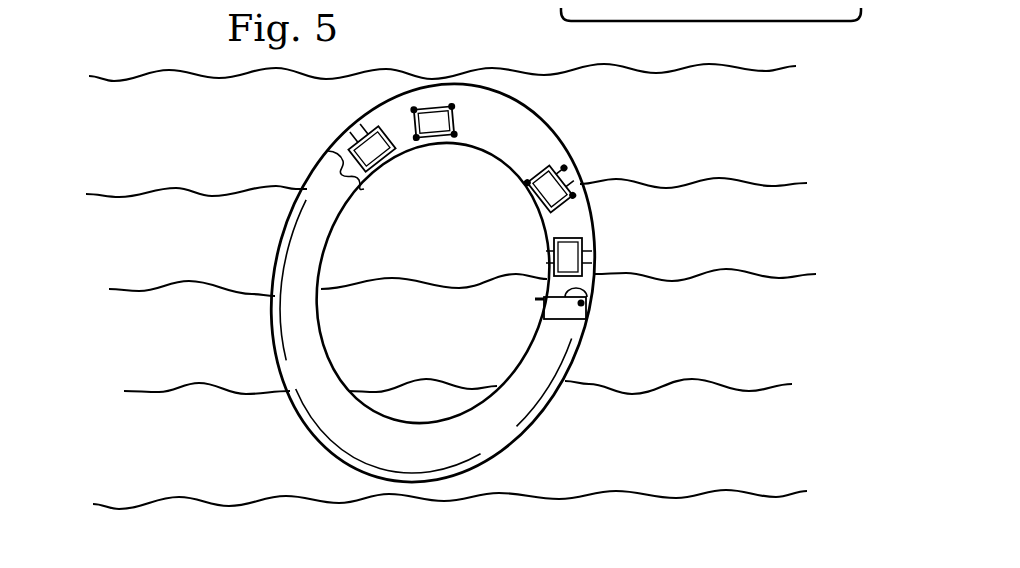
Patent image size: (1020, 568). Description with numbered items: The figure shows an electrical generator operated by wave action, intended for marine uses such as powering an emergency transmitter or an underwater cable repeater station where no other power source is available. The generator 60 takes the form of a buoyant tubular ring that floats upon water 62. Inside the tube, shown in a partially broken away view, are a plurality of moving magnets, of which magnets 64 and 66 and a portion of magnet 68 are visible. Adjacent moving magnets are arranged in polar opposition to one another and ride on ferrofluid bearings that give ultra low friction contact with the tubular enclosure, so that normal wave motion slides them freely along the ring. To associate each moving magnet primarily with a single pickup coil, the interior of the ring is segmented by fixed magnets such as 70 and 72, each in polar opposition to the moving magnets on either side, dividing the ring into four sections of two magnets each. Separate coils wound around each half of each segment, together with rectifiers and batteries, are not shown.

The magnetic ring / floating ring body 60 is at (298, 156).
The water 62 is at (743, 245).
The moving magnet 64 is at (428, 104).
The moving magnet 66 is at (556, 163).
The moving magnet 68 is at (586, 302).
The fixed magnet 70 is at (344, 141).
The fixed magnet 72 is at (577, 235).